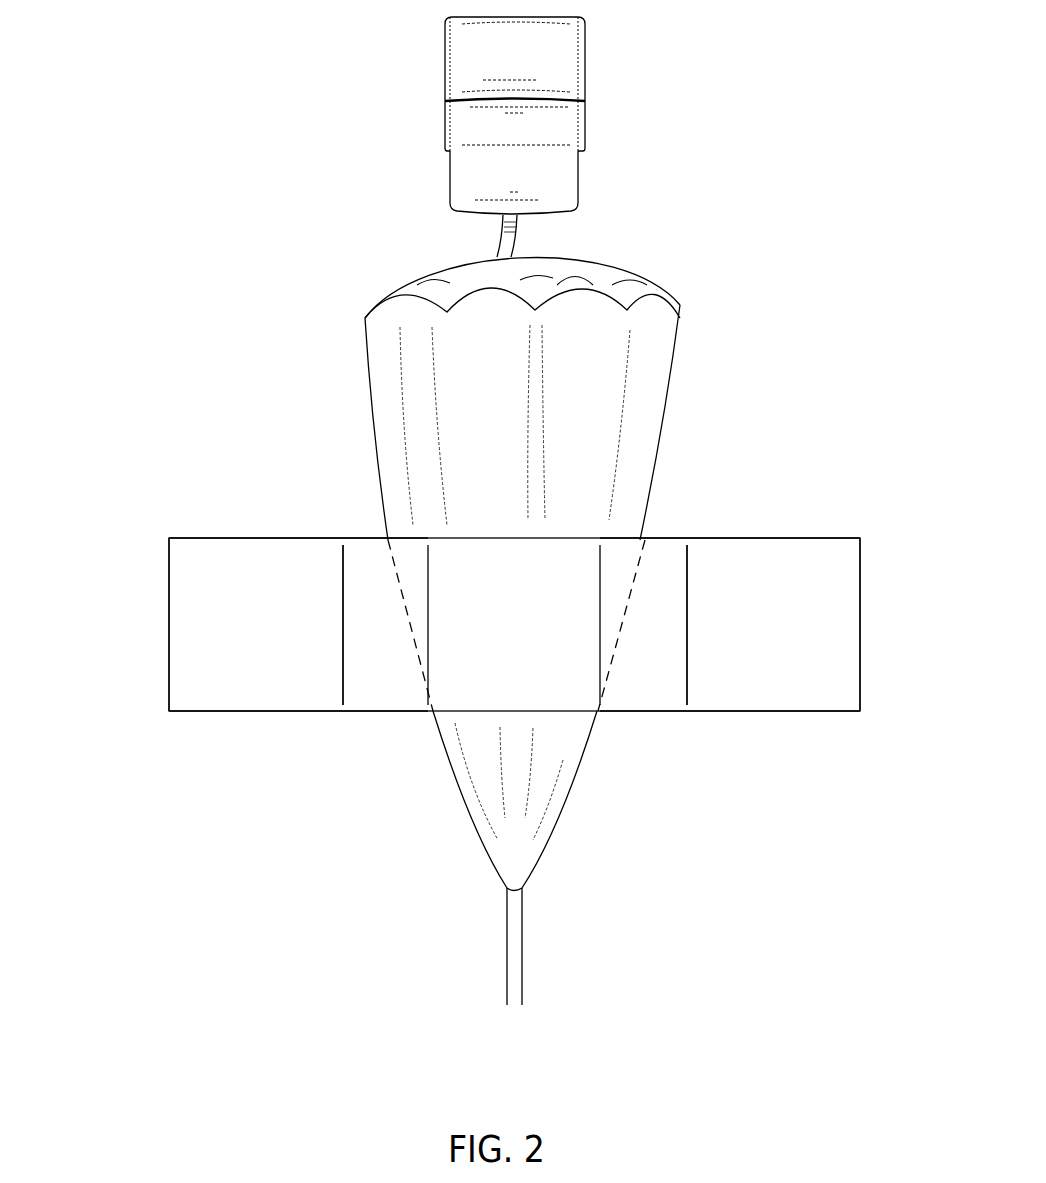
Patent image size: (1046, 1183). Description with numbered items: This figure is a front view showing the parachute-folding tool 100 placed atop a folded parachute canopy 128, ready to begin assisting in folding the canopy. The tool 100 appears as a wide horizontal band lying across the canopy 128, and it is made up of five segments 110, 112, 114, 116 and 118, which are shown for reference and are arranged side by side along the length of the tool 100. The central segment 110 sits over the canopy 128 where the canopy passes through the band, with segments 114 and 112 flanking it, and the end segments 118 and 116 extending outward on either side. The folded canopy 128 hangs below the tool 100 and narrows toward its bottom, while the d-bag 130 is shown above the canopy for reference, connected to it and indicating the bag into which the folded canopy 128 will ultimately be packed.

The parachute-folding tool 100 is at (122, 532).
The segment 110 is at (460, 592).
The segment 112 is at (657, 672).
The segment 114 is at (385, 690).
The segment 116 is at (813, 670).
The segment 118 is at (218, 660).
The folded parachute canopy 128 is at (595, 377).
The d-bag 130 is at (567, 57).